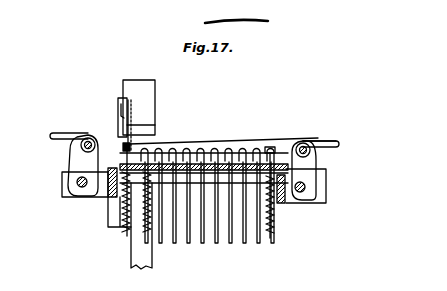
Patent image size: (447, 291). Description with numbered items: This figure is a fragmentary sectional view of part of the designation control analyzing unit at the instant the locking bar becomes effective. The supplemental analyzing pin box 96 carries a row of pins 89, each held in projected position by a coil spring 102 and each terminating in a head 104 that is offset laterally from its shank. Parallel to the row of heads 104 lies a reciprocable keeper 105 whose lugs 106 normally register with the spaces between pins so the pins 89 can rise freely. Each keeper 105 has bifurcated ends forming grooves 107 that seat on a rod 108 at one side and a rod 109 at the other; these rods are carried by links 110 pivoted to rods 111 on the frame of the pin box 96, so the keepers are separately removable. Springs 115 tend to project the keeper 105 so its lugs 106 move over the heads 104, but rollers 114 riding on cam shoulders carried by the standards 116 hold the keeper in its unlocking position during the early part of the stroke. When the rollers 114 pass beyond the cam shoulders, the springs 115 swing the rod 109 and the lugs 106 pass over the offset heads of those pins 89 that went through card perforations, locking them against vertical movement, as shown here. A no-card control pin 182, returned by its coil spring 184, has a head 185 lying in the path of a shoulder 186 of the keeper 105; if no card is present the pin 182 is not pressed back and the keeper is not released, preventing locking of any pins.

The pins 89 is at (253, 232).
The supplemental analyzing pin box 96 is at (277, 202).
The coil springs 102 is at (282, 224).
The heads 104 is at (230, 147).
The keeper 105 is at (290, 146).
The lugs 106 is at (262, 148).
The grooves 107 is at (72, 141).
The rod 108 is at (318, 142).
The rod 109 is at (86, 140).
The links 110 is at (78, 160).
The rods 111 is at (78, 188).
The rollers 114 is at (131, 145).
The springs 115 is at (128, 118).
The standards 116 is at (146, 96).
The no-card control pins 182 is at (124, 234).
The coil spring 184 is at (128, 222).
The heads 185 is at (118, 105).
The shoulders 186 is at (123, 152).